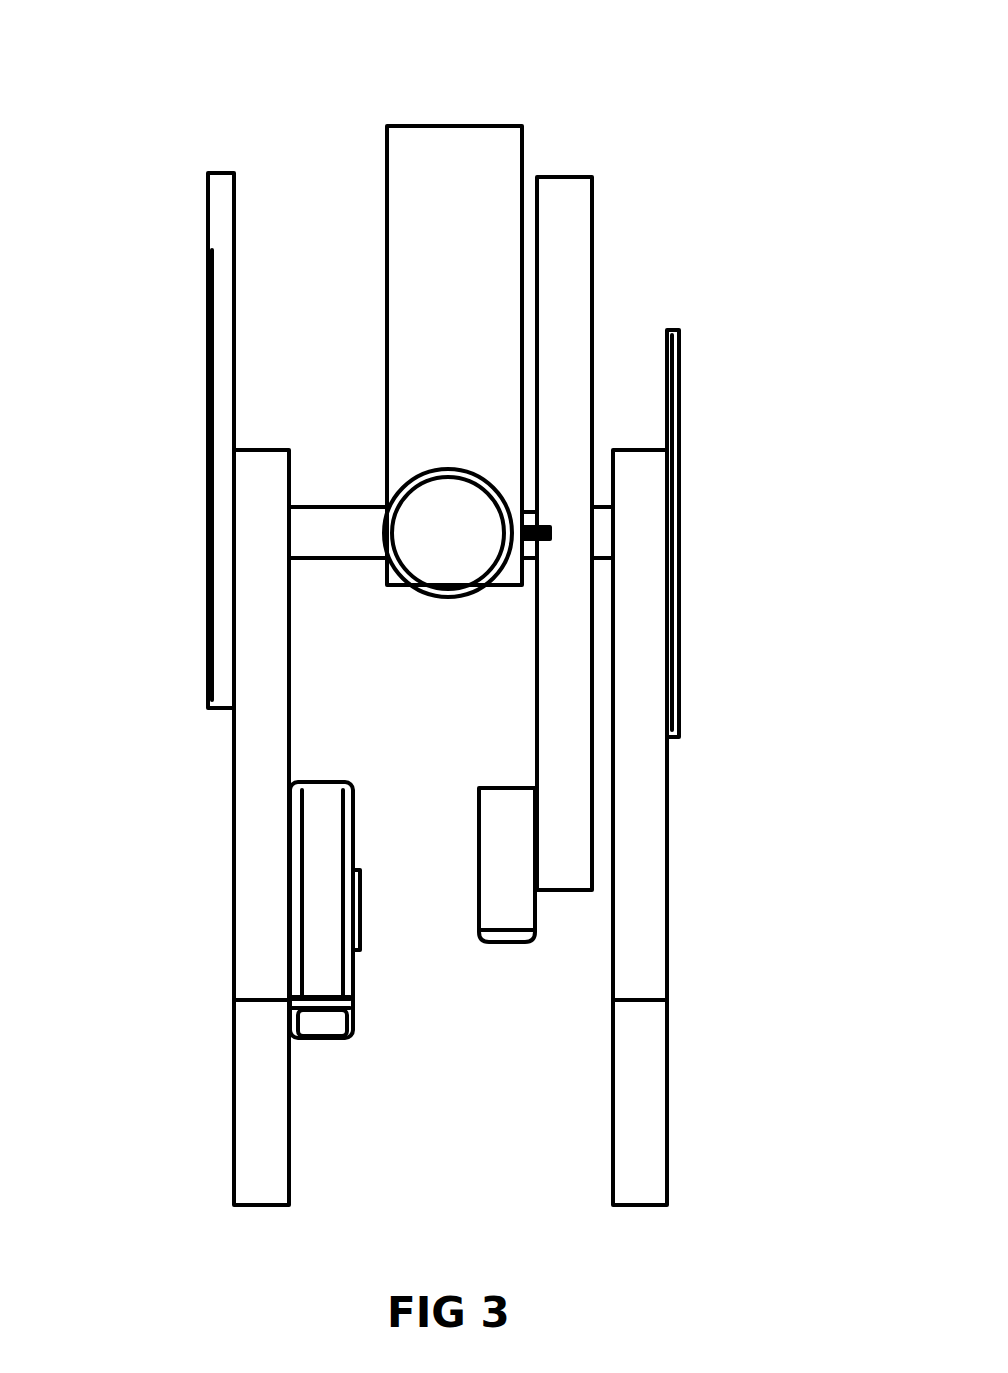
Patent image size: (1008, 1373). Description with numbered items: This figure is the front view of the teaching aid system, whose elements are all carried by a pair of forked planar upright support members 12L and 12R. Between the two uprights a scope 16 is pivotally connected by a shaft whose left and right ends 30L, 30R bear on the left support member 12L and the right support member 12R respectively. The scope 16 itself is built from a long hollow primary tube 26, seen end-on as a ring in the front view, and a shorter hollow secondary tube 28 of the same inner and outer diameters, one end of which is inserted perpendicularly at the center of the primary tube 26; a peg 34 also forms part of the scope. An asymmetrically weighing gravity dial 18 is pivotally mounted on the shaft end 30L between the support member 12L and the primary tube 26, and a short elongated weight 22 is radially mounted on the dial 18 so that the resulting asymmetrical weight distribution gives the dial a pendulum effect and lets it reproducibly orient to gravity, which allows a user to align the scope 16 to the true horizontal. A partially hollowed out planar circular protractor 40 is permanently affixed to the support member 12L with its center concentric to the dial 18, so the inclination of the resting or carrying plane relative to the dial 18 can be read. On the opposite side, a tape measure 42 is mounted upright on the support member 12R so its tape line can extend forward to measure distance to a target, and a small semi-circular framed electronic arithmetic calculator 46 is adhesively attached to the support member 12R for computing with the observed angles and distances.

The electronic arithmetic calculator 46 is at (203, 290).
The right upright support member 12R is at (262, 913).
The right shaft end 30R is at (342, 528).
The secondary tube 28 is at (448, 143).
The scope 16 is at (405, 233).
The primary tube 26 is at (448, 578).
The asymmetrically weighing gravity dial 18 is at (578, 297).
The peg 34 is at (540, 535).
The left shaft end 30L is at (602, 528).
The left upright support member 12L is at (628, 940).
The protractor 40 is at (682, 400).
The weight 22 is at (497, 887).
The tape measure 42 is at (310, 1040).